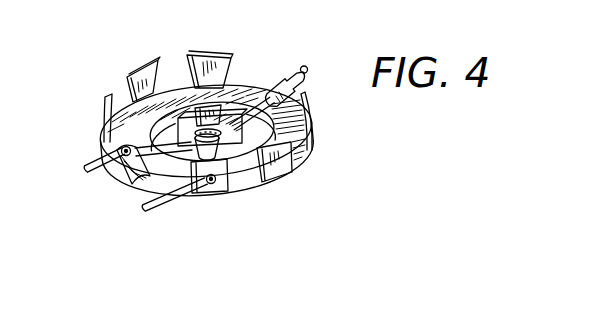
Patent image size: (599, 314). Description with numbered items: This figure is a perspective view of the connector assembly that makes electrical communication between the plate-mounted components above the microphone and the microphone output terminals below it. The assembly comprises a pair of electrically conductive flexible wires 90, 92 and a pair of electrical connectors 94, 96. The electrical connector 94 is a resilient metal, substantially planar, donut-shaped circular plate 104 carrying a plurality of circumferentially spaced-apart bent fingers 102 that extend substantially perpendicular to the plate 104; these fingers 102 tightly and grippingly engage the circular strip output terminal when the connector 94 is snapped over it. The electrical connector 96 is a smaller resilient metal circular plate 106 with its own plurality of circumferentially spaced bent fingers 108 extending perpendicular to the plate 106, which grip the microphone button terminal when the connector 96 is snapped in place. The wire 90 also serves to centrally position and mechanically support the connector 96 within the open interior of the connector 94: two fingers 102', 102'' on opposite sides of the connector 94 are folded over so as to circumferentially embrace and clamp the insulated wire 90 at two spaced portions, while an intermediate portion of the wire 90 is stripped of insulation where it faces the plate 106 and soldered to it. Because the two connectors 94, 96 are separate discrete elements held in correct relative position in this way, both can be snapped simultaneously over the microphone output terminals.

The electrically conductive flexible wire 90 is at (87, 163).
The electrically conductive flexible wire 92 is at (153, 197).
The electrical connector 94 is at (299, 159).
The electrical connector 96 is at (240, 149).
The bent fingers 102 is at (212, 102).
The folded-over finger 102' is at (120, 187).
The folded-over finger 102'' is at (311, 81).
The donut-shaped circular plate 104 is at (267, 72).
The circular plate 106 is at (193, 133).
The bent fingers 108 is at (244, 95).